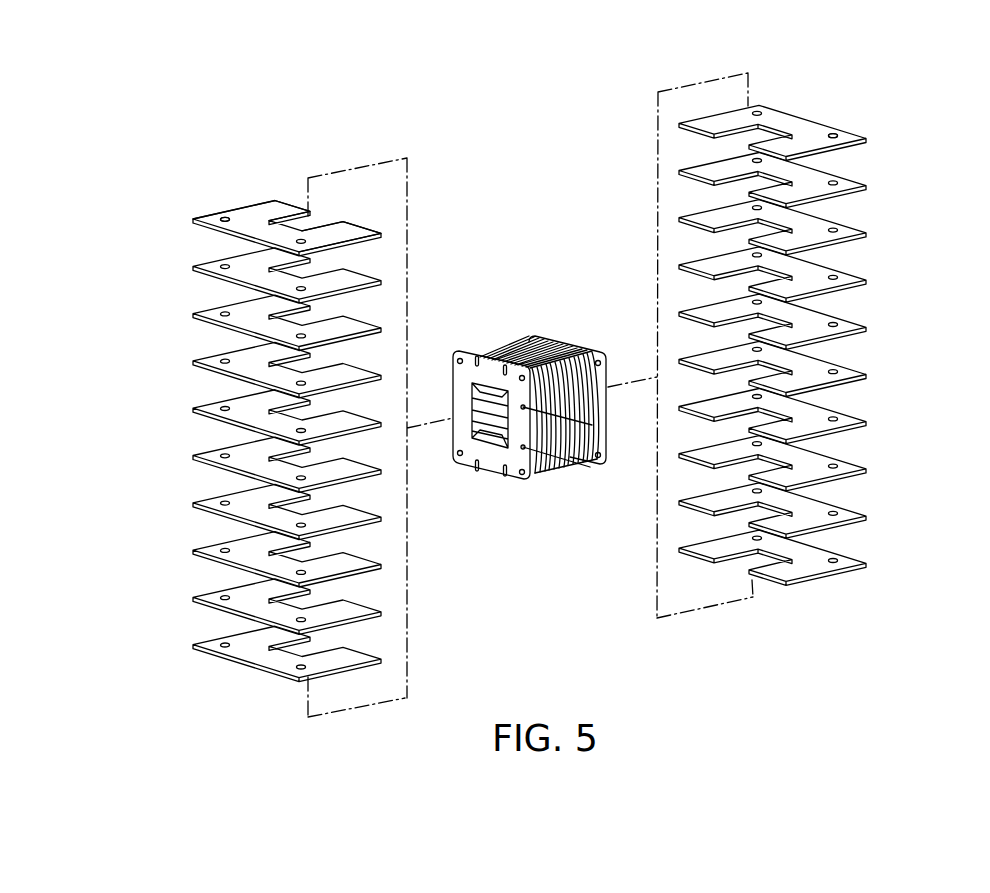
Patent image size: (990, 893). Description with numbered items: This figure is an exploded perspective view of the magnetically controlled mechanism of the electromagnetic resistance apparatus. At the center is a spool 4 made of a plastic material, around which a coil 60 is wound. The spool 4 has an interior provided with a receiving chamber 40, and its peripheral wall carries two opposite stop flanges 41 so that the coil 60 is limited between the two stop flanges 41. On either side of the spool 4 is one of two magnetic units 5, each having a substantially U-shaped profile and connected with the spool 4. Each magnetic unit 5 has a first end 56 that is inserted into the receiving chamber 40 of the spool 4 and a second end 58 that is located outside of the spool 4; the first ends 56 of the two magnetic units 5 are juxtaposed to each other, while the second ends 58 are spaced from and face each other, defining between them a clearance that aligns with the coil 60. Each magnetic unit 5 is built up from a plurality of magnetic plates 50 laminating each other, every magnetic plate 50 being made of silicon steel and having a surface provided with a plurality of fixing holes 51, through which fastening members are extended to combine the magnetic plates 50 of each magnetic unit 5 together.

The spool 4 is at (534, 457).
The magnetic unit 5 is at (545, 386).
The receiving chamber 40 is at (485, 428).
The stop flange 41 is at (515, 480).
The magnetic plate 50 is at (275, 232).
The fixing hole 51 is at (220, 218).
The first end 56 is at (348, 231).
The second end 58 is at (270, 210).
The coil 60 is at (550, 470).